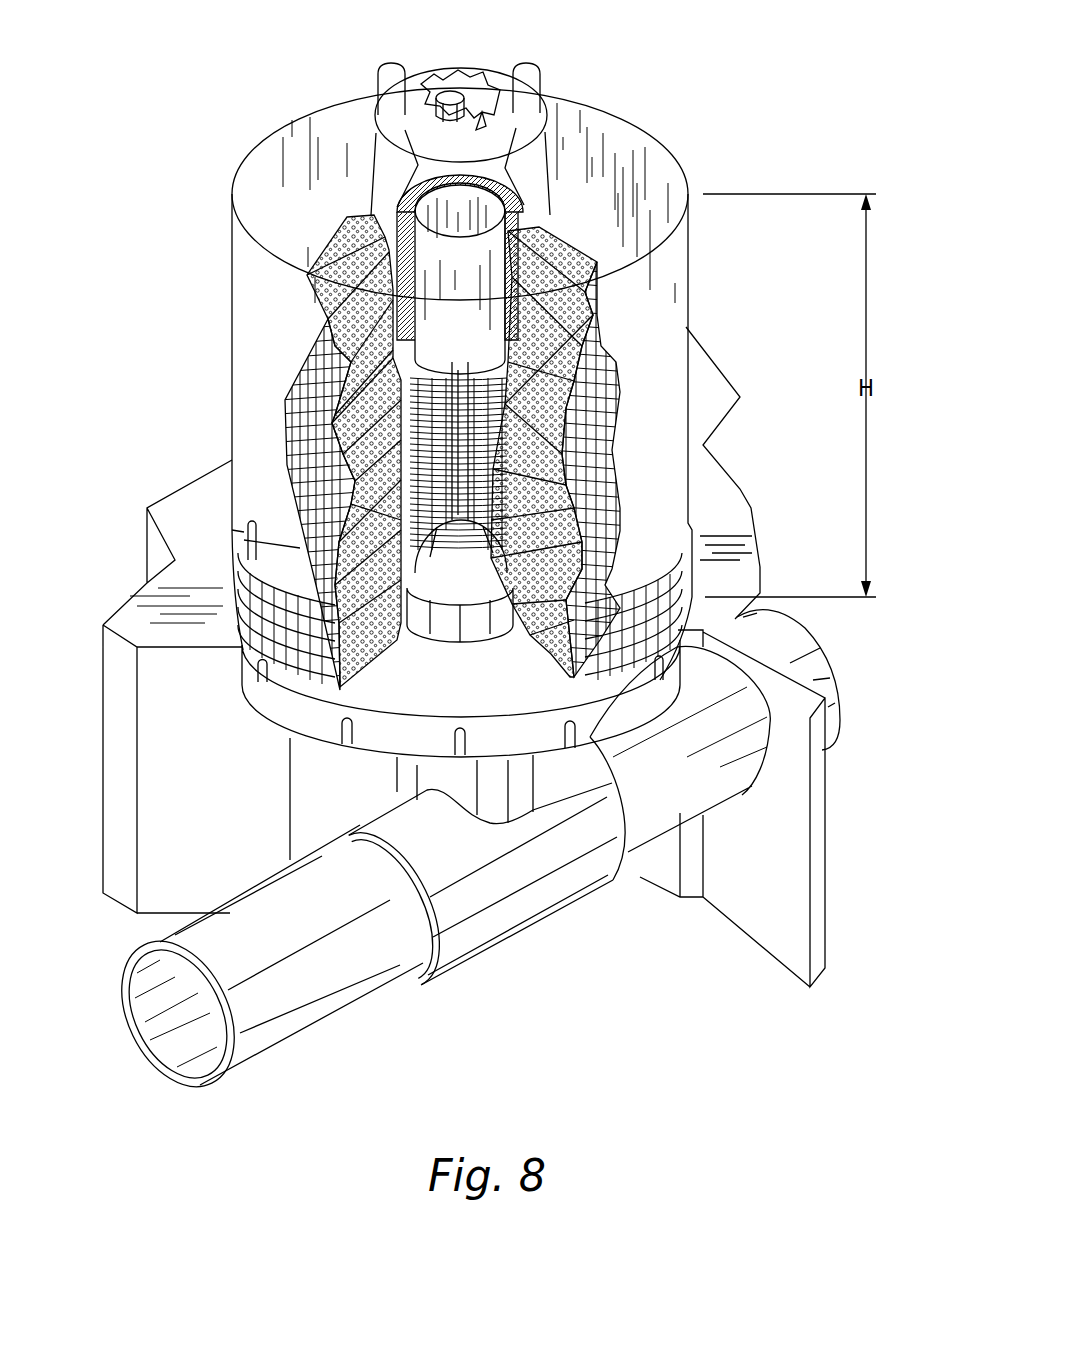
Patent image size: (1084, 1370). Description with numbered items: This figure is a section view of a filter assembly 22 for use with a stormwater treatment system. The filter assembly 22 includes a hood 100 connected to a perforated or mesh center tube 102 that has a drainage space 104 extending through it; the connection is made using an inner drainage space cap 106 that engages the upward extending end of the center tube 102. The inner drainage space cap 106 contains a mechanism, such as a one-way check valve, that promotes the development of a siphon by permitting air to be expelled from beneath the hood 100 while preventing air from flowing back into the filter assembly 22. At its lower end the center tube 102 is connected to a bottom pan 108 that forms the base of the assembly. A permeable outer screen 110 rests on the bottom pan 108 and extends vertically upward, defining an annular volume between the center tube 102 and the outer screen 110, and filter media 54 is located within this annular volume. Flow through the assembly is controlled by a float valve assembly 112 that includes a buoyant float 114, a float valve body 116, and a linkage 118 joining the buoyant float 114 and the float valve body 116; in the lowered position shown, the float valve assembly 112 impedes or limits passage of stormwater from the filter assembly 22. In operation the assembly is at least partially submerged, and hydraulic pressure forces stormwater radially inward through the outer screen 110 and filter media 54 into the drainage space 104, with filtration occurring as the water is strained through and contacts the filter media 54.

The filter assembly 22 is at (778, 61).
The filter media 54 is at (337, 545).
The hood 100 is at (686, 299).
The center tube 102 is at (300, 400).
The drainage space 104 is at (503, 465).
The inner drainage space cap 106 is at (533, 187).
The bottom pan 108 is at (323, 713).
The outer screen 110 is at (277, 630).
The float valve assembly 112 is at (508, 248).
The buoyant float 114 is at (447, 263).
The float valve body 116 is at (462, 575).
The linkage 118 is at (300, 460).